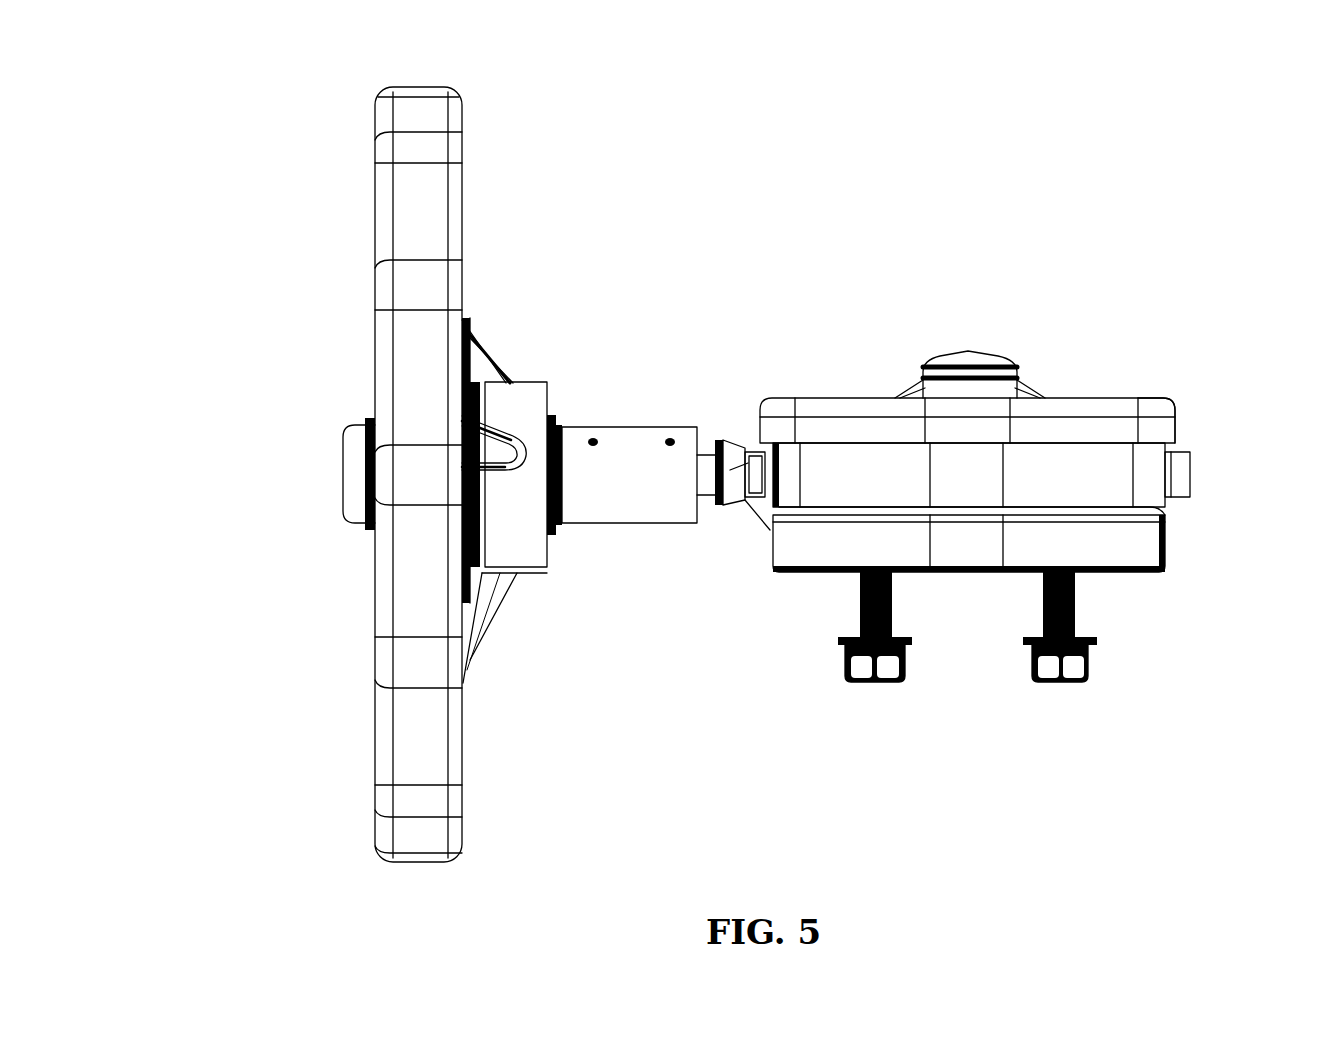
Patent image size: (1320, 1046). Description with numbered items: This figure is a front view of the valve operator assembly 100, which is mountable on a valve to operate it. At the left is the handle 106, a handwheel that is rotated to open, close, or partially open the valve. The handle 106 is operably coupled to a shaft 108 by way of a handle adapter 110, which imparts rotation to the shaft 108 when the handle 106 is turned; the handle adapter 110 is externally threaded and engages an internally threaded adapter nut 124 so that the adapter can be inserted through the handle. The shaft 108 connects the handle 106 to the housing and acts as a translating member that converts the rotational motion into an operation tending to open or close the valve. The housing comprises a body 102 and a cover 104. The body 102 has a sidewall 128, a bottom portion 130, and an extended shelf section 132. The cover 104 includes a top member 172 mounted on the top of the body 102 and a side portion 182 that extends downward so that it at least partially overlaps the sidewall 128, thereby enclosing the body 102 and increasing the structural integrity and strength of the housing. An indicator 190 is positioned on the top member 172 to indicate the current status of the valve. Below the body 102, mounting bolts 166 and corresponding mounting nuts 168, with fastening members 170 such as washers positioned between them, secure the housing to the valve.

The valve operator assembly 100 is at (205, 100).
The body 102 is at (1205, 516).
The cover 104 is at (1090, 368).
The handle 106 is at (348, 192).
The shaft 108 is at (712, 440).
The handle adapter 110 is at (604, 420).
The adapter nut 124 is at (343, 460).
The sidewall 128 is at (1156, 470).
The bottom portion 130 is at (1166, 550).
The extended shelf section 132 is at (963, 557).
The mounting bolts 166 is at (859, 598).
The mounting nuts 168 is at (853, 668).
The fastening members 170 is at (822, 638).
The top member 172 is at (822, 398).
The side portion 182 is at (1165, 427).
The indicator 190 is at (988, 354).